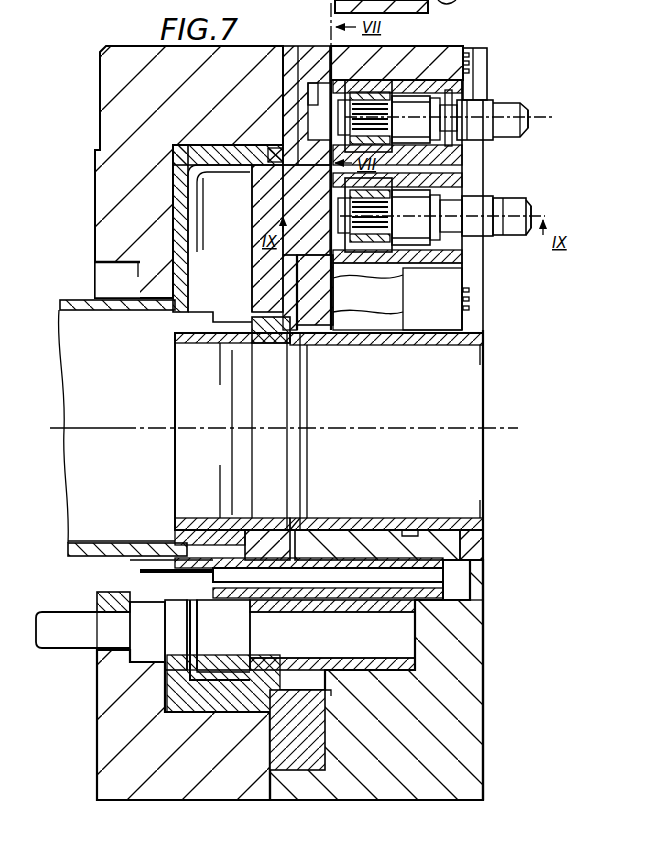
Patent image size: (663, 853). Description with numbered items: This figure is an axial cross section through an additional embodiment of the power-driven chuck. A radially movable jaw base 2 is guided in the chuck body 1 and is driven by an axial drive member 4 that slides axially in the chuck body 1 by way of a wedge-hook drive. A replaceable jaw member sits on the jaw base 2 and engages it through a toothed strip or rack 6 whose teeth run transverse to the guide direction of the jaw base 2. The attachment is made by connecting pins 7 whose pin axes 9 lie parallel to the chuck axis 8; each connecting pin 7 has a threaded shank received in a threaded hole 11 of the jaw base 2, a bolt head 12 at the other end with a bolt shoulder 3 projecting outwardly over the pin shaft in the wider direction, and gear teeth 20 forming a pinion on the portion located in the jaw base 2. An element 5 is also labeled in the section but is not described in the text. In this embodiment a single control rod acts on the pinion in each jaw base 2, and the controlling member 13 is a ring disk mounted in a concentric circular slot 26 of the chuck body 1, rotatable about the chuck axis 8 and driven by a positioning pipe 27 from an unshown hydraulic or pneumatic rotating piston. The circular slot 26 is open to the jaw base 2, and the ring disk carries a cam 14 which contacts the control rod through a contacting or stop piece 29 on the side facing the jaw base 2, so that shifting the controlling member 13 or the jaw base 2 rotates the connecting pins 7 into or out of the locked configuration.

The chuck body 1 is at (470, 642).
The jaw base 2 is at (447, 60).
The bolt shoulder 3 is at (531, 113).
The axial drive member 4 is at (258, 253).
The block 5 is at (322, 266).
The toothed strip or rack 6 is at (470, 190).
The connecting pin 7 is at (487, 112).
The chuck axis 8 is at (518, 430).
The pin axis 9 is at (556, 118).
The threaded hole 11 is at (396, 182).
The bolt head 12 is at (526, 136).
The controlling member 13 is at (294, 99).
The cam 14 is at (283, 78).
The gear teeth 20 is at (360, 82).
The circular slot 26 is at (282, 127).
The positioning pipe 27 is at (162, 313).
The contacting or stop piece 29 is at (318, 84).